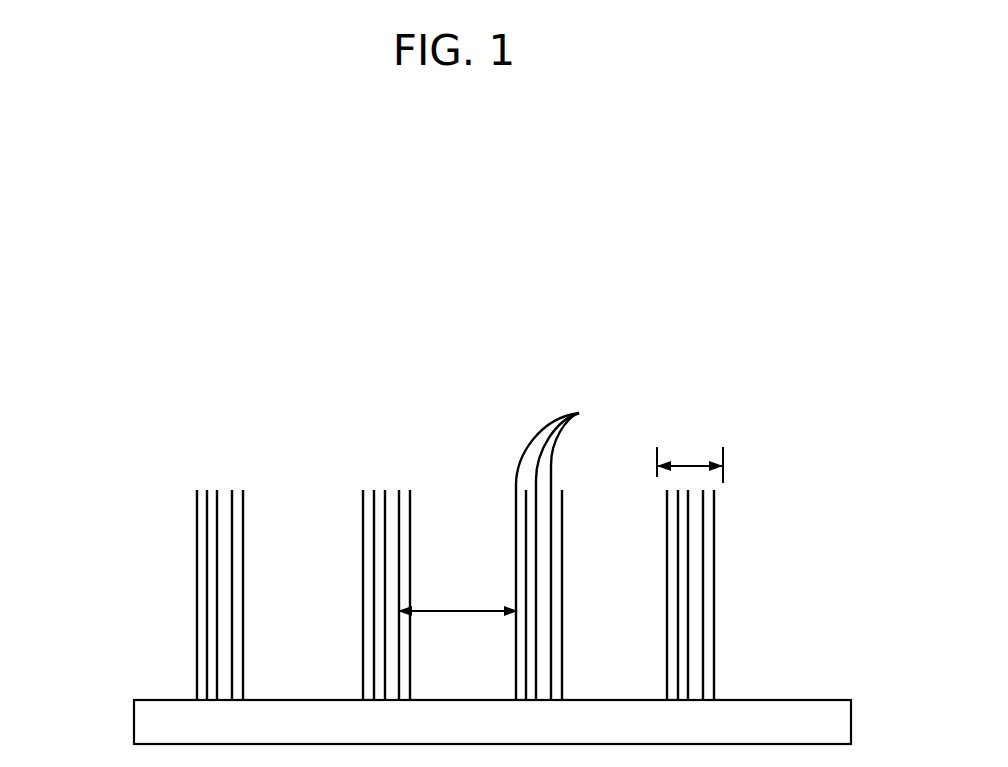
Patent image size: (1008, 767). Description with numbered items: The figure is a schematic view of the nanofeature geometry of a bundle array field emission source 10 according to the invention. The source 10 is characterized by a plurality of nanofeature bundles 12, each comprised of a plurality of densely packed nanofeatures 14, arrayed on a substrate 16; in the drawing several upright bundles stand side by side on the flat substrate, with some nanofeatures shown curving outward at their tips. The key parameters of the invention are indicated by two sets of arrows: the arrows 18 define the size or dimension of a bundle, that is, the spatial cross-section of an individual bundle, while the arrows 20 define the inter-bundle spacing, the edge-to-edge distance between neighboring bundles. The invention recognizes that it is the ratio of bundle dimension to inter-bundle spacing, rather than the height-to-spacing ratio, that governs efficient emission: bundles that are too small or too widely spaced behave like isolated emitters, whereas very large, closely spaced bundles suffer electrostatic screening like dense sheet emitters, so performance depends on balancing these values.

The bundle array field emission source 10 is at (89, 491).
The nanofeature bundles 12 is at (385, 490).
The nanofeatures 14 is at (573, 550).
The substrate 16 is at (851, 722).
The arrows defining bundle dimension 18 is at (723, 447).
The arrows defining inter-bundle spacing 20 is at (465, 605).